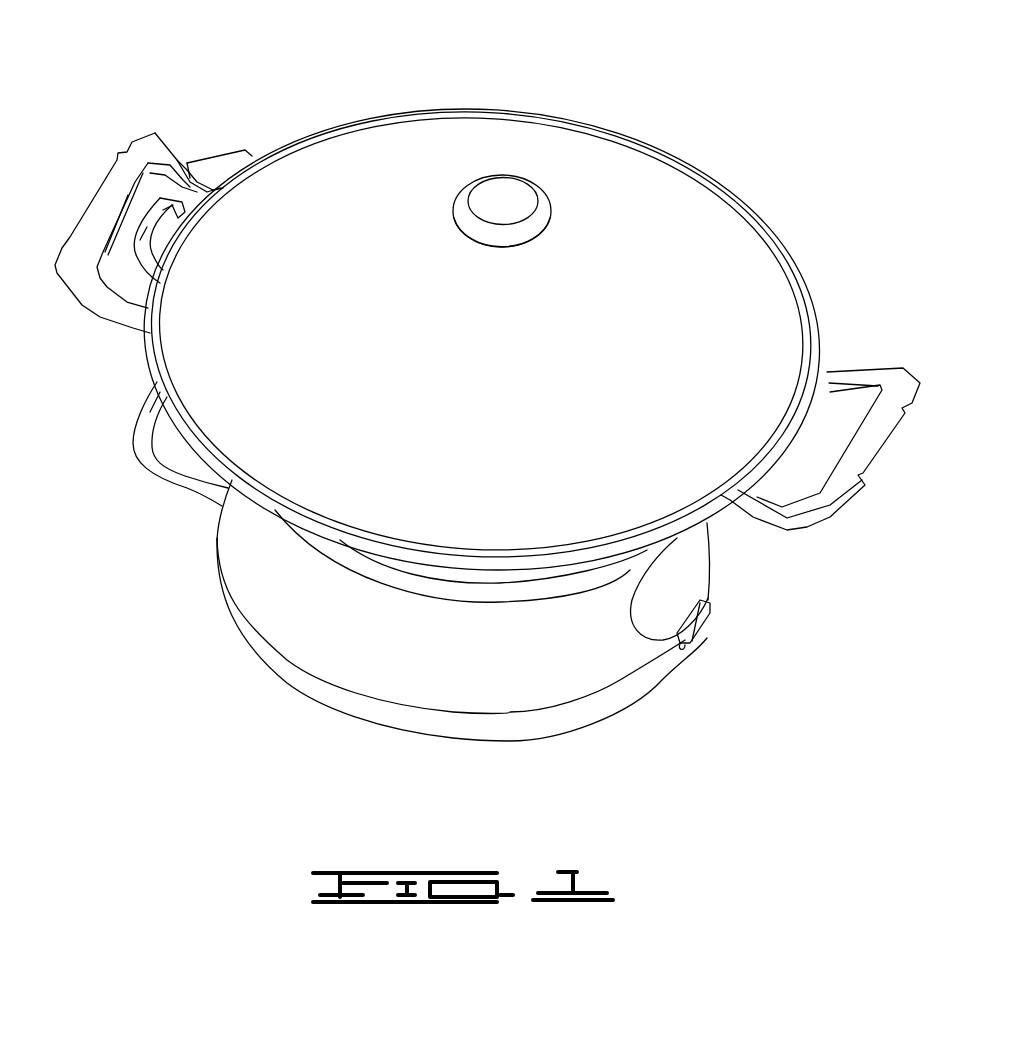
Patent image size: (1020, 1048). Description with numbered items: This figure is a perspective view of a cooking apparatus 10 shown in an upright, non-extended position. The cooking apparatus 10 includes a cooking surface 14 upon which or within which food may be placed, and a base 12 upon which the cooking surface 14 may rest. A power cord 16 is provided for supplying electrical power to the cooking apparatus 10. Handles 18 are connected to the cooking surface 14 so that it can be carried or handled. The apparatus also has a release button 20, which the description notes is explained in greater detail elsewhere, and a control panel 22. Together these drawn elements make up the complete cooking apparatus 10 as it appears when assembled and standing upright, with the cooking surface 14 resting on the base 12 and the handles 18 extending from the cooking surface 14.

The cooking apparatus 10 is at (631, 82).
The base 12 is at (367, 714).
The cooking surface 14 is at (761, 192).
The power cord 16 is at (172, 491).
The handles 18 is at (140, 133).
The release button 20 is at (711, 613).
The control panel 22 is at (701, 553).